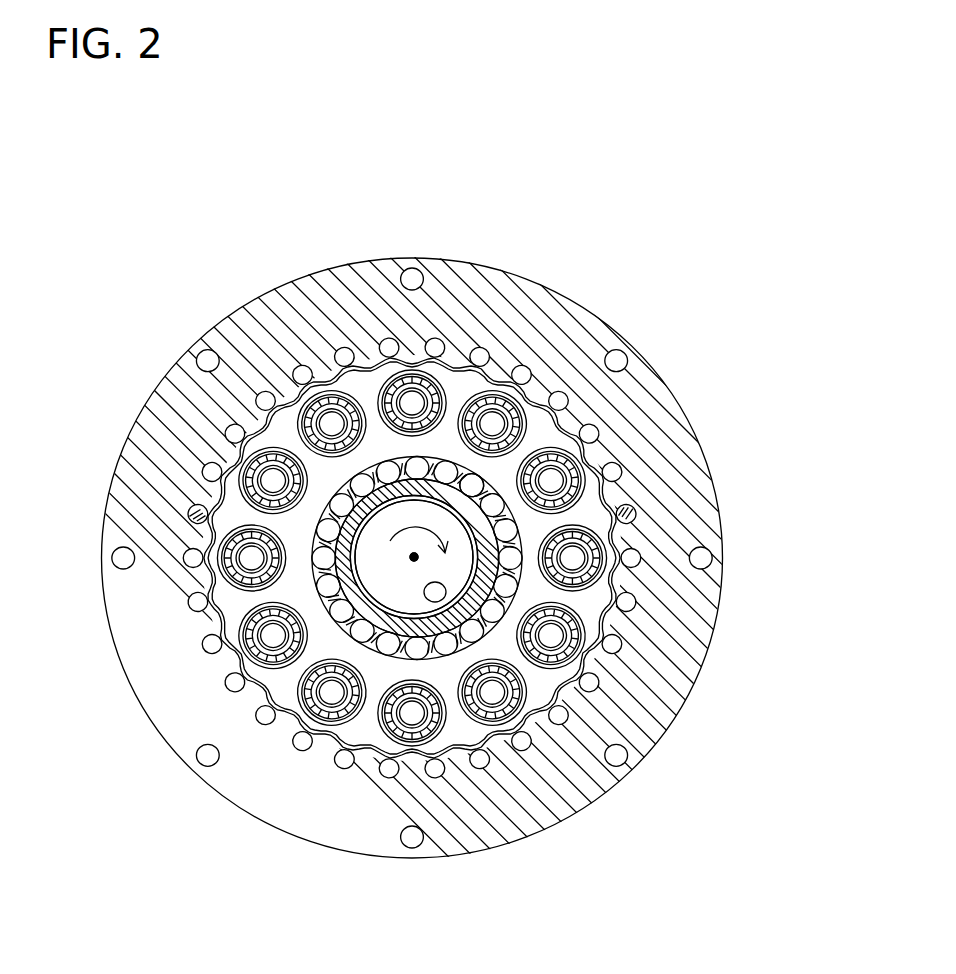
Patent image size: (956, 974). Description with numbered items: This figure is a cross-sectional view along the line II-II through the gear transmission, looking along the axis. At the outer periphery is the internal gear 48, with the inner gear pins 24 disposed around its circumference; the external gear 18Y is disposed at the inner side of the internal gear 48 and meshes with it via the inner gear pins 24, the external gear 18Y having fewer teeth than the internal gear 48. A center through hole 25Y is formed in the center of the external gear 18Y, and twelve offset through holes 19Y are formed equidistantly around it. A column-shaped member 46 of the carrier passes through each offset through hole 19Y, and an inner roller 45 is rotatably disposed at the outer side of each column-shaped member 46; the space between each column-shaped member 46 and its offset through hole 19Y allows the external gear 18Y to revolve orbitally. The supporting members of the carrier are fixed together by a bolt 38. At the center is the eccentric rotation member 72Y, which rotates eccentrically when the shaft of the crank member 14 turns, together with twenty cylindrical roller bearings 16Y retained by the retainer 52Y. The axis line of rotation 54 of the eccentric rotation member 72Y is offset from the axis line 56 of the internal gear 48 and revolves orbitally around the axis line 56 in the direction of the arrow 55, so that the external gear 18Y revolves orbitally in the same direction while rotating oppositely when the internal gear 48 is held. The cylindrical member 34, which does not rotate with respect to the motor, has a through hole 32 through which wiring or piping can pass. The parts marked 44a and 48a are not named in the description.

The crank member 14 is at (428, 488).
The cylindrical roller bearing 16Y is at (387, 468).
The external gear 18Y is at (362, 382).
The offset through hole 19Y is at (482, 585).
The inner gear pin 24 is at (185, 508).
The center through hole 25Y is at (342, 601).
The through hole 32 is at (429, 620).
The cylindrical member 34 is at (552, 724).
The bolt 38 is at (640, 516).
The flange portion 44a is at (602, 583).
The inner roller 45 is at (582, 515).
The column-shaped member 46 is at (718, 588).
The internal gear 48 is at (690, 478).
The casing inner periphery 48a is at (188, 548).
The retainer 52Y is at (487, 488).
The axis line of rotation 54 is at (414, 562).
The arrow 55 is at (406, 523).
The axis line 56 is at (414, 560).
The eccentric rotation member 72Y is at (612, 628).